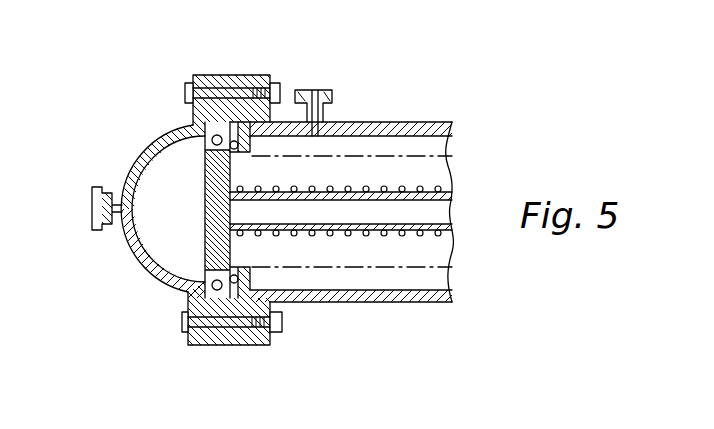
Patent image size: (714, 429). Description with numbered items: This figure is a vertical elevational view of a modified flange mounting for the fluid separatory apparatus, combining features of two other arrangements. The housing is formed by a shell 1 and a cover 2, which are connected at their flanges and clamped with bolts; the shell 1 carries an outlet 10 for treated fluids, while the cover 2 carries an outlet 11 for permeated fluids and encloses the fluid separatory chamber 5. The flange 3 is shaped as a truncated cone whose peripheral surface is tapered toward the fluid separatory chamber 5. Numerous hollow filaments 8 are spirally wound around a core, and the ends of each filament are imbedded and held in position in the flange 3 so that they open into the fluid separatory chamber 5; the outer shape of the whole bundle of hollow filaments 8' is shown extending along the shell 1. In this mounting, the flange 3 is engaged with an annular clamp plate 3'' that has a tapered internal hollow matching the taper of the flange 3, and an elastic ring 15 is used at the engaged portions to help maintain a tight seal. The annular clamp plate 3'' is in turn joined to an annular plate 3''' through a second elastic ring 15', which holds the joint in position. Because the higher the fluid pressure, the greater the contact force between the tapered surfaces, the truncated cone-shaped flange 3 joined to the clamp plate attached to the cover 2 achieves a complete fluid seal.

The shell 1 is at (419, 300).
The cover 2 is at (147, 151).
The flange 3 is at (167, 214).
The annular clamp plate 3'' is at (232, 344).
The annular plate 3''' is at (256, 76).
The fluid separatory chamber 5 is at (177, 157).
The hollow filaments 8 is at (341, 289).
The bundle of hollow filaments 8' is at (341, 137).
The outlet for treated fluids 10 is at (315, 90).
The outlet for permeated fluids 11 is at (92, 209).
The elastic ring 15 is at (185, 307).
The elastic ring 15' is at (214, 80).